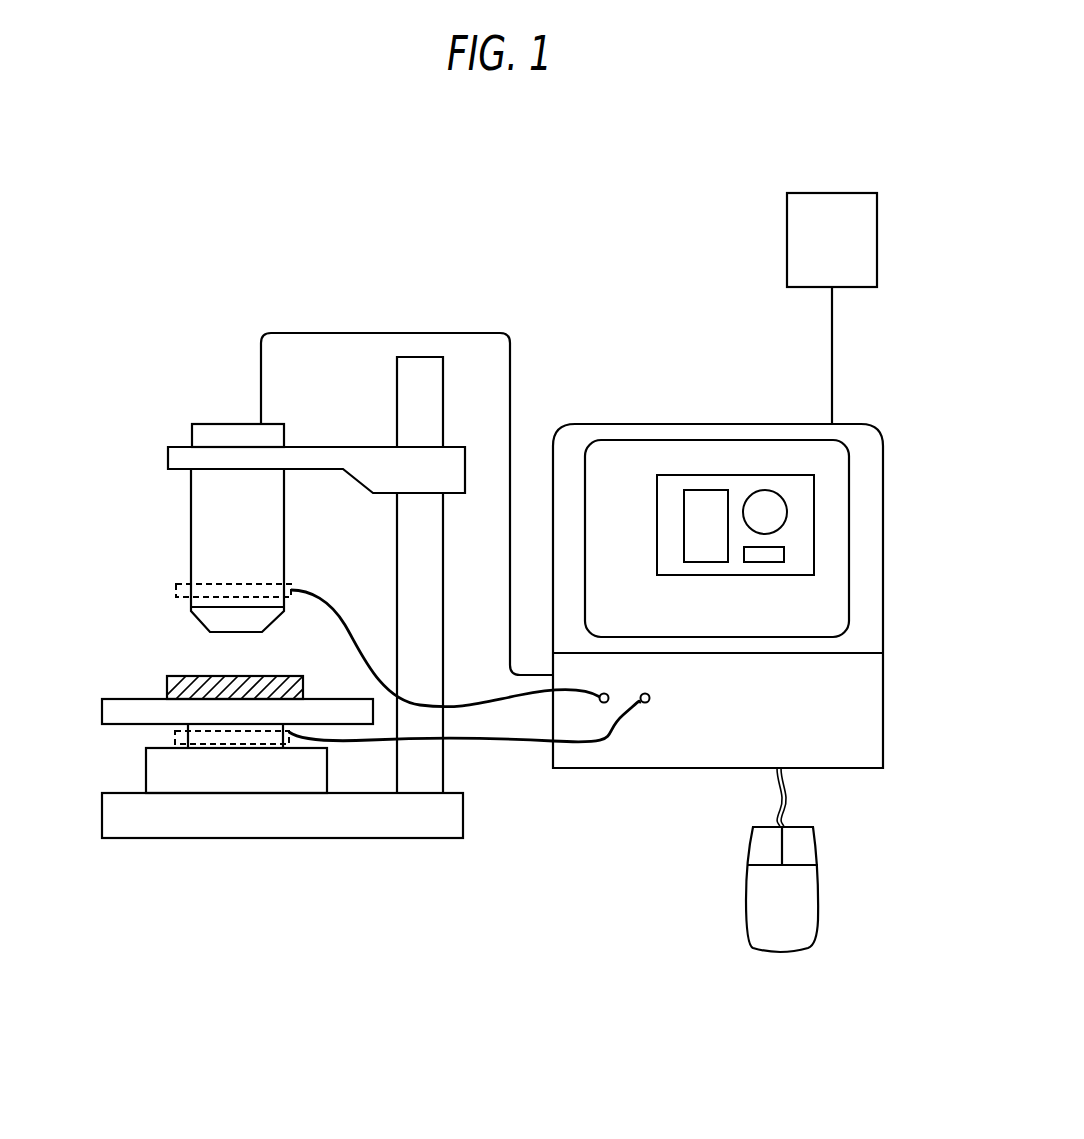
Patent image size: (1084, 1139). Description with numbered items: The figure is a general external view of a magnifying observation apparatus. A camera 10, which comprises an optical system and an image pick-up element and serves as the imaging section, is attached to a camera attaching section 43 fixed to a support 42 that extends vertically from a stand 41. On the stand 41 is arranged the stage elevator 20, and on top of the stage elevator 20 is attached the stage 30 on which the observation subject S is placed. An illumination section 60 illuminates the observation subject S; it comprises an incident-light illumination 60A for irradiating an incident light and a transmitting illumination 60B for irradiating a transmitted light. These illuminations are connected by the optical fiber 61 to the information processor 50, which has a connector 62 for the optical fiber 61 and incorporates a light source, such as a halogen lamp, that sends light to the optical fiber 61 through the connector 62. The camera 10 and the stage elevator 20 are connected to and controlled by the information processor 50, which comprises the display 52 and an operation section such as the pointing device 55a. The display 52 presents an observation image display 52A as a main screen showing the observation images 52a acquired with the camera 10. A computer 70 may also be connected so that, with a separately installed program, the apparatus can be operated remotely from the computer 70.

The camera 10 is at (215, 423).
The stage elevator 20 is at (190, 783).
The stage 30 is at (132, 699).
The observation subject S is at (283, 676).
The stand 41 is at (386, 826).
The support 42 is at (432, 782).
The camera attaching section 43 is at (177, 453).
The information processor 50 is at (673, 423).
The display 52 is at (615, 453).
The observation image display 52A is at (772, 465).
The observation image 52a is at (802, 512).
The pointing device 55a is at (800, 940).
The illumination section 60 is at (158, 530).
The incident-light illumination 60A is at (176, 587).
The transmitting illumination 60B is at (175, 733).
The optical fiber 61 is at (527, 743).
The connector 62 is at (652, 697).
The computer 70 is at (825, 193).